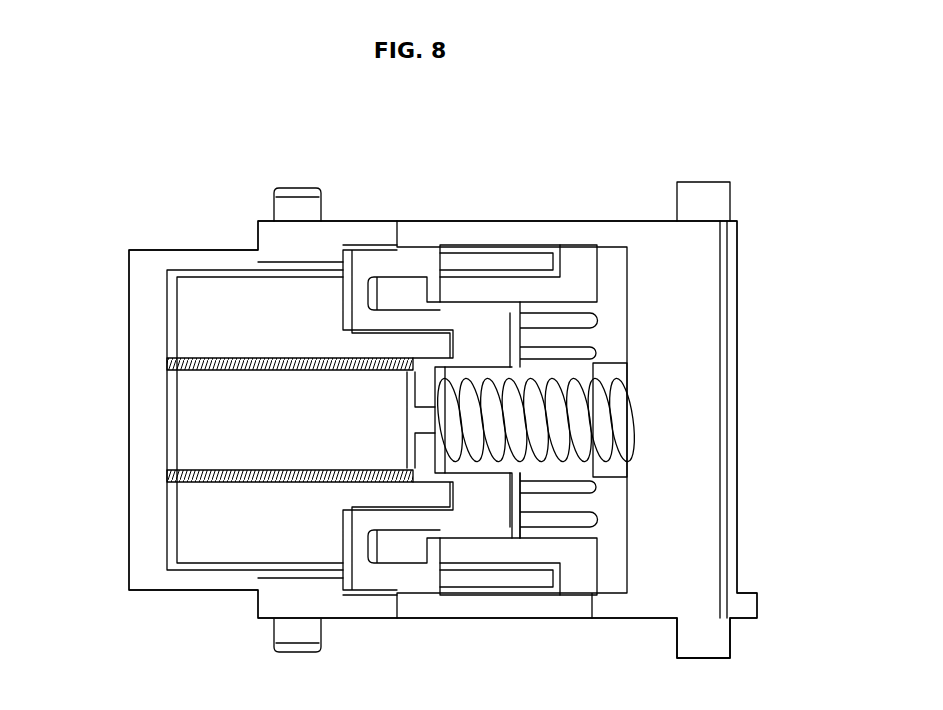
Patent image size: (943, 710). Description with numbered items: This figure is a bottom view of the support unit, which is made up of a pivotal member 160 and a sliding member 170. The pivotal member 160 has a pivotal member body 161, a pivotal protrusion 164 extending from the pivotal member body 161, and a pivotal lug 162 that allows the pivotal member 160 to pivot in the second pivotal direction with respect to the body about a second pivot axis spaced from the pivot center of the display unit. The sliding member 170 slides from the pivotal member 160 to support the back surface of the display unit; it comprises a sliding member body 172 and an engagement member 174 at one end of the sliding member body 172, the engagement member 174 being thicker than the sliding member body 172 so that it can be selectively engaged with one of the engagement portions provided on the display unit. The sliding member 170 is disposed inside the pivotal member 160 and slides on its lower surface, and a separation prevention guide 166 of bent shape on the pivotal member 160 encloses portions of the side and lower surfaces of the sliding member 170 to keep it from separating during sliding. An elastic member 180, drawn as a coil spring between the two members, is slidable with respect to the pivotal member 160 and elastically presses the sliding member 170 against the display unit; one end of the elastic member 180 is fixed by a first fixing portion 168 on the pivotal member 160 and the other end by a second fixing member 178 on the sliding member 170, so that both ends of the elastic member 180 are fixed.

The pivotal member 160 is at (753, 509).
The pivotal member body 161 is at (521, 232).
The pivotal lug 162 is at (705, 190).
The pivotal protrusion 164 is at (294, 203).
The separation prevention guide 166 is at (300, 268).
The first fixing portion 168 is at (587, 370).
The sliding member 170 is at (114, 575).
The sliding member body 172 is at (192, 257).
The engagement member 174 is at (130, 322).
The second fixing member 178 is at (441, 365).
The elastic member 180 is at (575, 417).